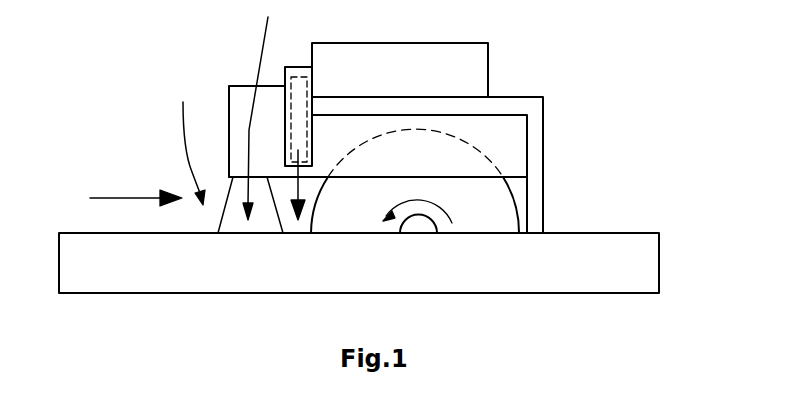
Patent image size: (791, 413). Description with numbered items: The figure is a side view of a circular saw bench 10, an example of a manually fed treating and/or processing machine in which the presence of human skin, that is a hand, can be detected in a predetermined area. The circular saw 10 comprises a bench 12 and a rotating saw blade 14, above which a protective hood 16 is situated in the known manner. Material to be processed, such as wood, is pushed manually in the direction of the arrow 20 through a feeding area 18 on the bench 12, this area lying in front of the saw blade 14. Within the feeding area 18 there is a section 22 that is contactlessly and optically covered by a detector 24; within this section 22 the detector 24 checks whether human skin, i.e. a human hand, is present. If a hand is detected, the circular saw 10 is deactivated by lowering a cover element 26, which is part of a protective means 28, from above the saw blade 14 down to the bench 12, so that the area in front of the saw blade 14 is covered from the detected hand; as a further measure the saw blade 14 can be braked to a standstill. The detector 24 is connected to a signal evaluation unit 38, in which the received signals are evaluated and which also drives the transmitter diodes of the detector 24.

The circular saw bench 10 is at (429, 116).
The bench 12 is at (560, 267).
The saw blade 14 is at (487, 204).
The protective hood 16 is at (510, 145).
The feeding area 18 is at (188, 140).
The arrow 20 is at (125, 197).
The section 22 is at (264, 110).
The detector 24 is at (235, 63).
The cover element 26 is at (302, 97).
The protective means 28 is at (297, 46).
The signal evaluation unit 38 is at (458, 65).